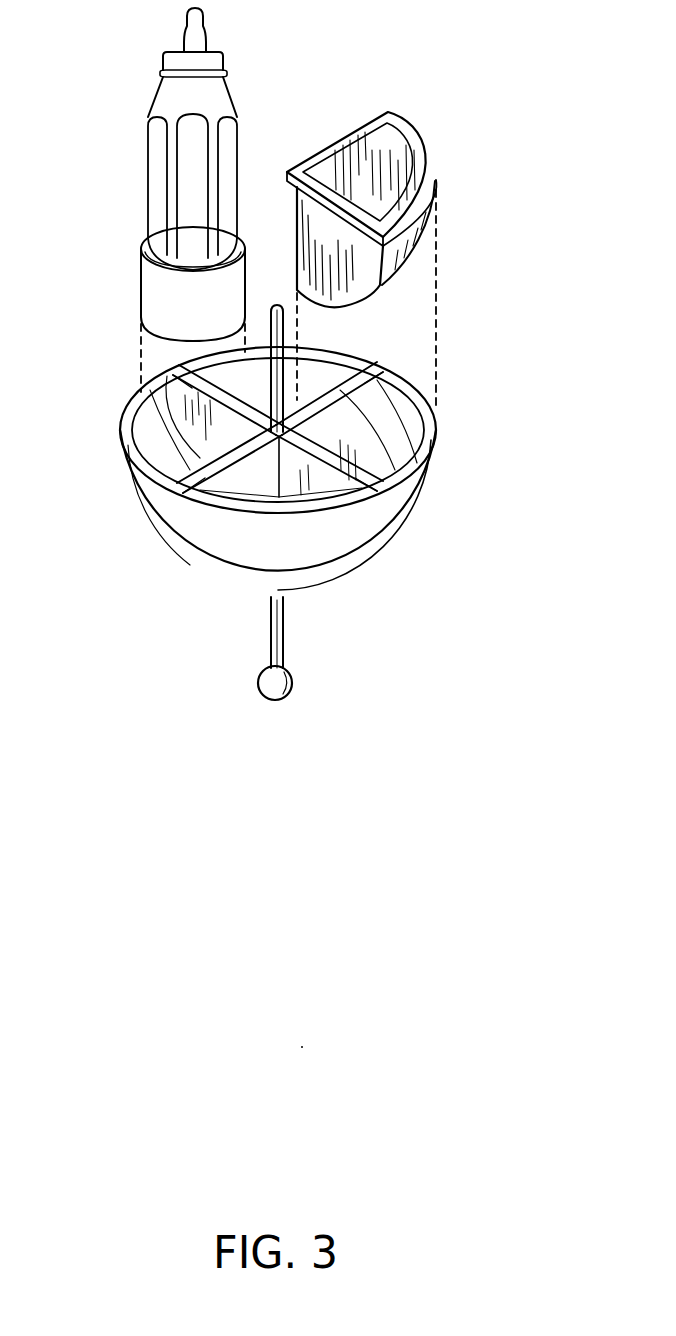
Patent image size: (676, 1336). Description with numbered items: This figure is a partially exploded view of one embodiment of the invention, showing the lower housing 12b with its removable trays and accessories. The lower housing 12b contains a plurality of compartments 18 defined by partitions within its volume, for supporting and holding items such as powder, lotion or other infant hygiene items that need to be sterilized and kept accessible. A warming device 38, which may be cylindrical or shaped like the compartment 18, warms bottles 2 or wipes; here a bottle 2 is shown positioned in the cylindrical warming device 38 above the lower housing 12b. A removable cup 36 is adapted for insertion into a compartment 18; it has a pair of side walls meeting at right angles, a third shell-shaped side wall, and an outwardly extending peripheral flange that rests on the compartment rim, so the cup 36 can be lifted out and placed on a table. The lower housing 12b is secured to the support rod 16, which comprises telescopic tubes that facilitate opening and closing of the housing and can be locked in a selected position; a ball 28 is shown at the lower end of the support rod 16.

The bottle 2 is at (232, 100).
The lower housing 12b is at (437, 452).
The support rod 16 is at (278, 304).
The compartment 18 is at (380, 410).
The ball / weight 28 is at (293, 688).
The removable cup 36 is at (430, 138).
The warming device 38 is at (138, 283).